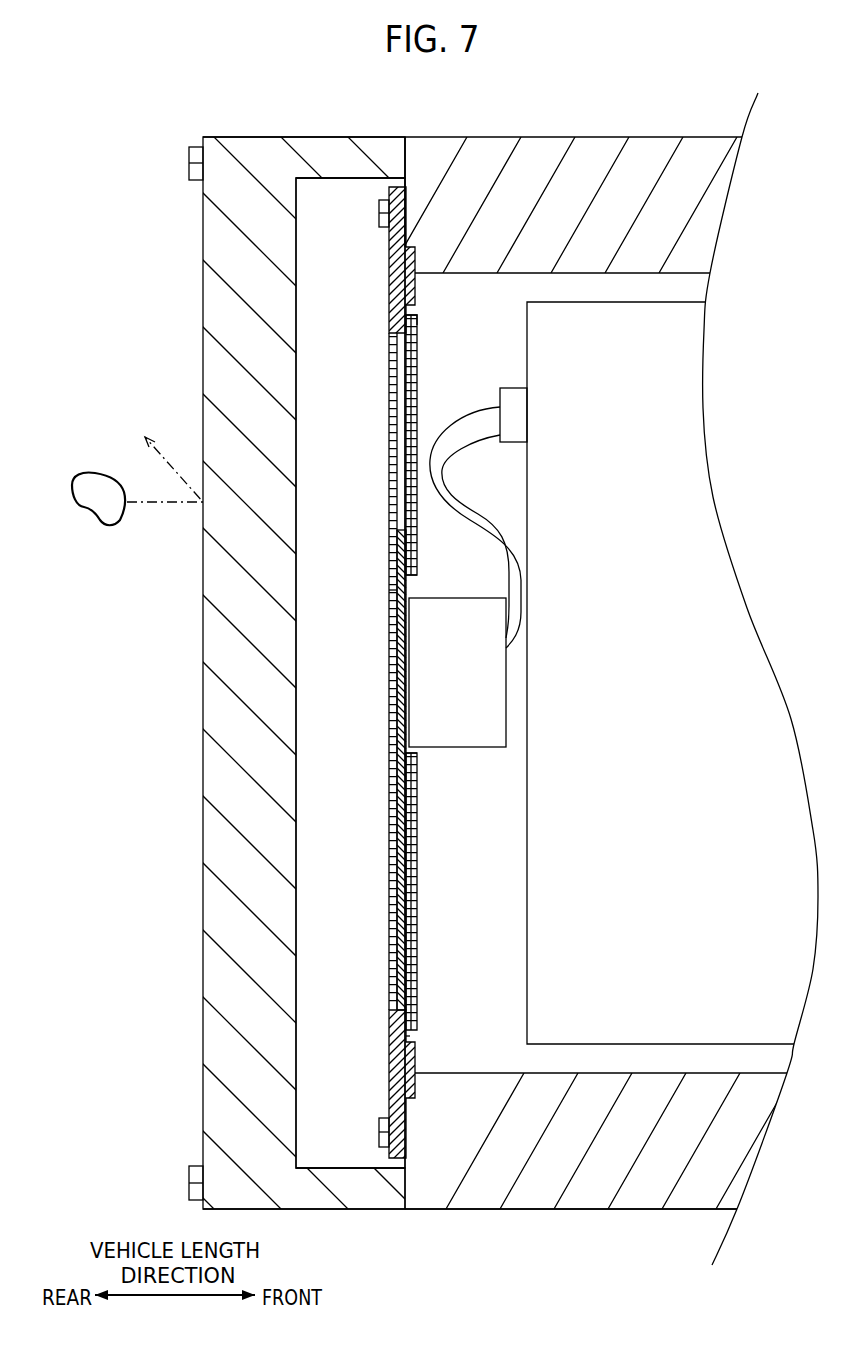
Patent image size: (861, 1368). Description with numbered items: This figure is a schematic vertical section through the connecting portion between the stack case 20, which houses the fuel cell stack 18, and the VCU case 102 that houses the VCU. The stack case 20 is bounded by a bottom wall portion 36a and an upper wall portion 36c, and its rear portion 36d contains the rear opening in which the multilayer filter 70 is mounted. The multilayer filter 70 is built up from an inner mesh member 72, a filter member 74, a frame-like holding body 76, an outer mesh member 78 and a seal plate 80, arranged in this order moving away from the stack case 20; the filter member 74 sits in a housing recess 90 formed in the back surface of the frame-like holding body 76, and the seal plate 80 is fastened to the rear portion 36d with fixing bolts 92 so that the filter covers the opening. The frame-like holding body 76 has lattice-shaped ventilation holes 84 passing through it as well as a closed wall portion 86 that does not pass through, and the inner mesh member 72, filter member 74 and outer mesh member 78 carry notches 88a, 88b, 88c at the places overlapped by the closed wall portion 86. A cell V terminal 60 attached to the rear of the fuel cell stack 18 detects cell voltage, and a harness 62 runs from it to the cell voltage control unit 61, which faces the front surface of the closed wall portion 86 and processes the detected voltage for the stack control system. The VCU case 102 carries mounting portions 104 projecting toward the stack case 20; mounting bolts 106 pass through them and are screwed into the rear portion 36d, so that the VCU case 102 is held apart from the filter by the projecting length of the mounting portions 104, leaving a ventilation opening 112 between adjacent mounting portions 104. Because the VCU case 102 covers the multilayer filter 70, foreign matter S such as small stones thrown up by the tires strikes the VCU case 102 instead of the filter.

The fuel cell stack 18 is at (672, 398).
The stack case 20 is at (514, 1224).
The bottom wall portion 36a is at (593, 1195).
The upper wall portion 36c is at (597, 155).
The rear portion 36d is at (405, 160).
The cell V terminal 60 is at (514, 418).
The cell voltage control unit 61 is at (497, 669).
The harness 62 is at (497, 540).
The multilayer filter 70 is at (418, 197).
The inner mesh member 72 is at (418, 319).
The filter member 74 is at (413, 353).
The frame-like holding body 76 is at (408, 1063).
The outer mesh member 78 is at (393, 355).
The seal plate 80 is at (393, 275).
The ventilation holes 84 is at (399, 385).
The closed wall portion 86 is at (402, 692).
The notch 88a is at (416, 578).
The notch 88b is at (412, 767).
The notch 88c is at (392, 588).
The housing recess 90 is at (410, 1036).
The fixing bolts 92 is at (378, 213).
The VCU case 102 is at (220, 694).
The mounting portions 104 is at (333, 150).
The mounting bolts 106 is at (188, 163).
The ventilation opening 112 is at (325, 754).
The foreign matter S is at (92, 485).